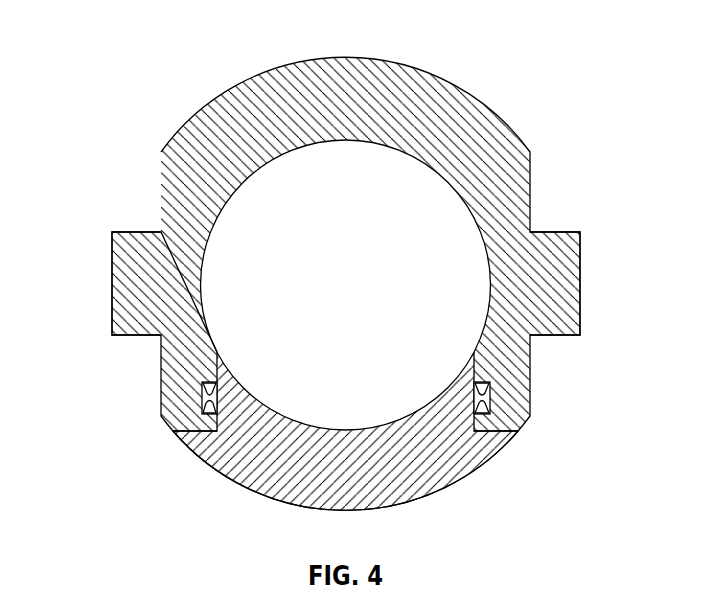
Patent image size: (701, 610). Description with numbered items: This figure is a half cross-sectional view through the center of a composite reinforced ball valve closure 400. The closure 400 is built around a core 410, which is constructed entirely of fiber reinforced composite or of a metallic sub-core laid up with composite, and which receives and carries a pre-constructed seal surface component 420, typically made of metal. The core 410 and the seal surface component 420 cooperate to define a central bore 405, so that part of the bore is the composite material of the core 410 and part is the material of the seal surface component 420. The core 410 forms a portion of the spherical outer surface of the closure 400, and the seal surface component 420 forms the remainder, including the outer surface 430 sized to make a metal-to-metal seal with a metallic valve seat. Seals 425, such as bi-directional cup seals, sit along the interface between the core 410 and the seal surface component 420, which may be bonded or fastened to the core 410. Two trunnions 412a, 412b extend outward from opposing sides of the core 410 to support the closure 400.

The composite reinforced valve closure 400 is at (343, 286).
The central bore 405 is at (365, 296).
The core 410 is at (243, 110).
The trunnion 412a is at (120, 285).
The trunnion 412b is at (568, 277).
The seal surface component 420 is at (408, 490).
The seals 425 is at (213, 392).
The outer surface of lower body 430 is at (247, 491).